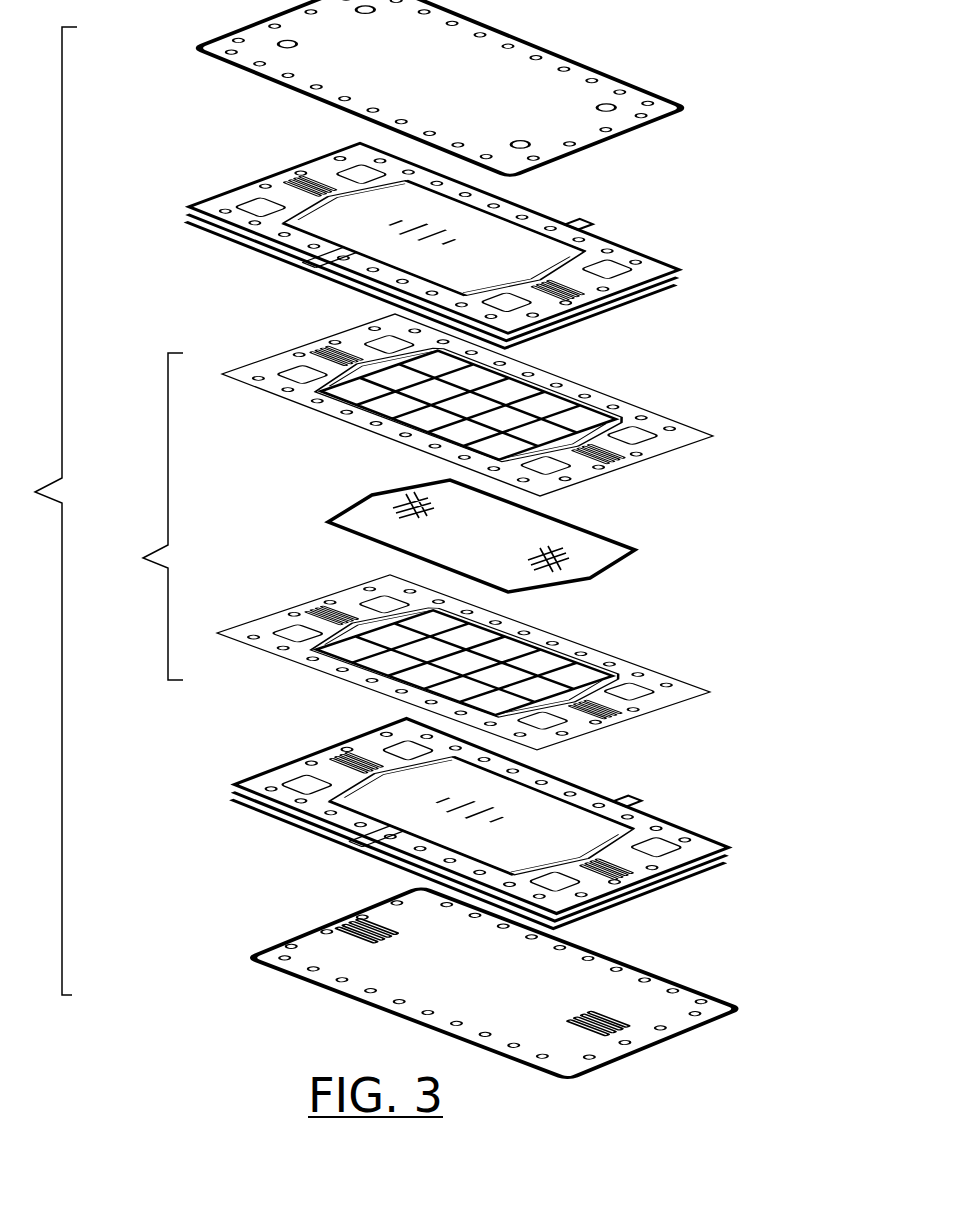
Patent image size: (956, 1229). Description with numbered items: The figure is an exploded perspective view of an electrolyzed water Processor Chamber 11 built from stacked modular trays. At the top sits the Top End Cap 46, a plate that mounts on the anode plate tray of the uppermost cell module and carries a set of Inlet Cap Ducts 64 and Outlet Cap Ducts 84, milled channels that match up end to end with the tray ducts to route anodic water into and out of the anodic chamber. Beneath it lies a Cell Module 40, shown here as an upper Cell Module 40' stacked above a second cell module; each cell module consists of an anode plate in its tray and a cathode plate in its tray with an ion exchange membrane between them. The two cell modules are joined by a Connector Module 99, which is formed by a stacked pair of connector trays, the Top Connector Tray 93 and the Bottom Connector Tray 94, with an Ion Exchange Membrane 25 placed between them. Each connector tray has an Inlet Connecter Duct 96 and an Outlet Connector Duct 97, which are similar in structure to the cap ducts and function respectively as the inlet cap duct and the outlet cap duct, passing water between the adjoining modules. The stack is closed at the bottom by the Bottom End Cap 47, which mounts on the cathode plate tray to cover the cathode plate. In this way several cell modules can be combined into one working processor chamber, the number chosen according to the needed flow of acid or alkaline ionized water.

The Processor Chamber 11 is at (39, 511).
The Top End Cap 46 is at (677, 102).
The Cell Module 40 is at (472, 243).
The Connector Module 99 is at (145, 516).
The Top Connector Tray 93 is at (512, 404).
The Inlet Connecter Duct 96 is at (328, 353).
The Outlet Connector Duct 97 is at (637, 460).
The Ion Exchange Membrane 25 is at (587, 567).
The Bottom Connector Tray 94 is at (693, 695).
The upper Cell Module 40' is at (523, 821).
The Bottom End Cap 47 is at (521, 971).
The Inlet Cap Ducts 64 is at (348, 920).
The Outlet Cap Ducts 84 is at (632, 1027).